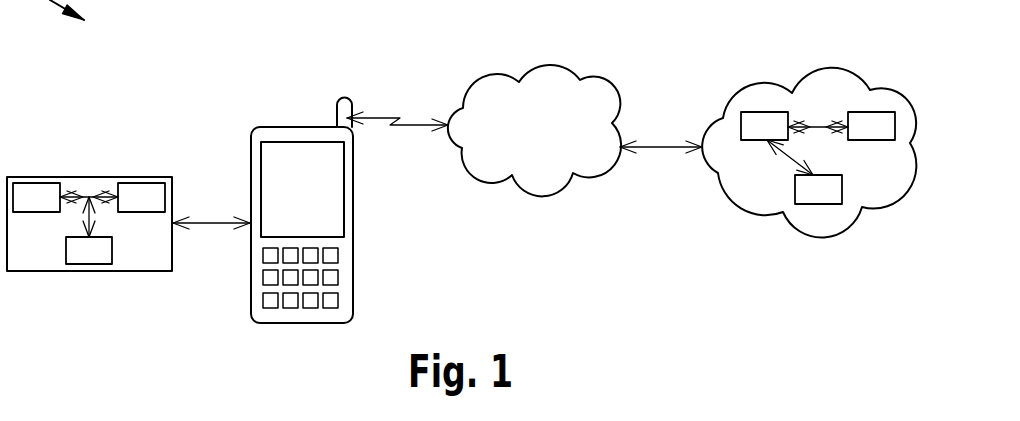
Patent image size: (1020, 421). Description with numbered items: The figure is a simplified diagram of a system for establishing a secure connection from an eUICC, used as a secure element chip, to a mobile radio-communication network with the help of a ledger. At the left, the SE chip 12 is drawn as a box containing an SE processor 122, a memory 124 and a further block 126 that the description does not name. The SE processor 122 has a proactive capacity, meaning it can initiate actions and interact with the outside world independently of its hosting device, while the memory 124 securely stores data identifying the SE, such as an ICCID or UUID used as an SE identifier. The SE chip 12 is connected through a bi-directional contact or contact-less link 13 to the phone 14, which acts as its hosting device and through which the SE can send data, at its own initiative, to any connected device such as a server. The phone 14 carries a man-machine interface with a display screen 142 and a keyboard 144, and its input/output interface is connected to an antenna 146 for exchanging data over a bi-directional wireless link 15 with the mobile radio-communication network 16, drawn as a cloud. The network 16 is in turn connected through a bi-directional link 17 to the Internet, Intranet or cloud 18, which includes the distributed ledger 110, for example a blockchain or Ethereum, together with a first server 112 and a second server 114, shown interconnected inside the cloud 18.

The SE chip 12 is at (48, 271).
The SE processor 122 is at (30, 183).
The memory 124 is at (140, 183).
The memory 126 is at (89, 264).
The bi-directional CT or CTL link 13 is at (210, 222).
The phone 14 is at (353, 278).
The display screen 142 is at (338, 300).
The keyboard 144 is at (293, 142).
The antenna 146 is at (339, 108).
The bi-directional wireless link 15 is at (383, 118).
The mobile radio-communication network 16 is at (553, 65).
The bi-directional link 17 is at (660, 146).
The cloud 18 is at (740, 212).
The distributed ledger 110 is at (763, 112).
The first server 112 is at (873, 112).
The second server 114 is at (822, 204).